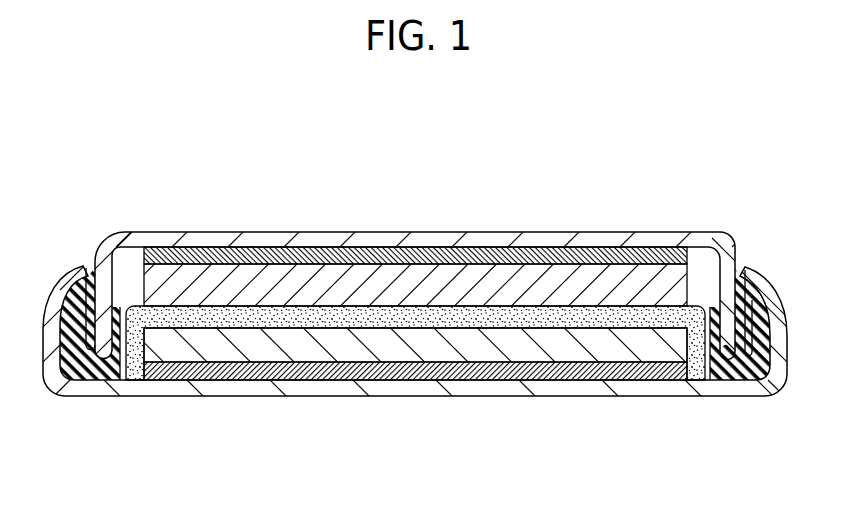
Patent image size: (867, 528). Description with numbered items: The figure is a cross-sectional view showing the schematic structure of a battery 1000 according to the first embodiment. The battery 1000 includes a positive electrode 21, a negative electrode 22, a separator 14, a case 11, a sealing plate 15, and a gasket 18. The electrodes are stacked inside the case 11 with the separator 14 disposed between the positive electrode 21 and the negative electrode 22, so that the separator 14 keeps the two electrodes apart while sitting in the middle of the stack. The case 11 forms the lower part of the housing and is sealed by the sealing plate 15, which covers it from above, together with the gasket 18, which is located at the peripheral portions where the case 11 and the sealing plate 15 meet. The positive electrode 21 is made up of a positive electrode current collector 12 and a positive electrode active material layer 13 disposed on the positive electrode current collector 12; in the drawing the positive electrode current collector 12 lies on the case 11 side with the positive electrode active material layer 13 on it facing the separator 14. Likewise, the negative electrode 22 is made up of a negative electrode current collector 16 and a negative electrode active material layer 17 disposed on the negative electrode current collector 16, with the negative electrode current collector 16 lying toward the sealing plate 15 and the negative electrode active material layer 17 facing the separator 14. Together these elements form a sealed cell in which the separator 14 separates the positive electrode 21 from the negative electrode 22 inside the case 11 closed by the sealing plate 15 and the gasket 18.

The battery 1000 is at (570, 112).
The case 11 is at (188, 398).
The sealing plate 15 is at (186, 241).
The gasket 18 is at (733, 375).
The separator 14 is at (608, 320).
The negative electrode 22 is at (387, 163).
The negative electrode current collector 16 is at (301, 253).
The negative electrode active material layer 17 is at (367, 286).
The positive electrode 21 is at (543, 463).
The positive electrode active material layer 13 is at (525, 345).
The positive electrode current collector 12 is at (470, 370).